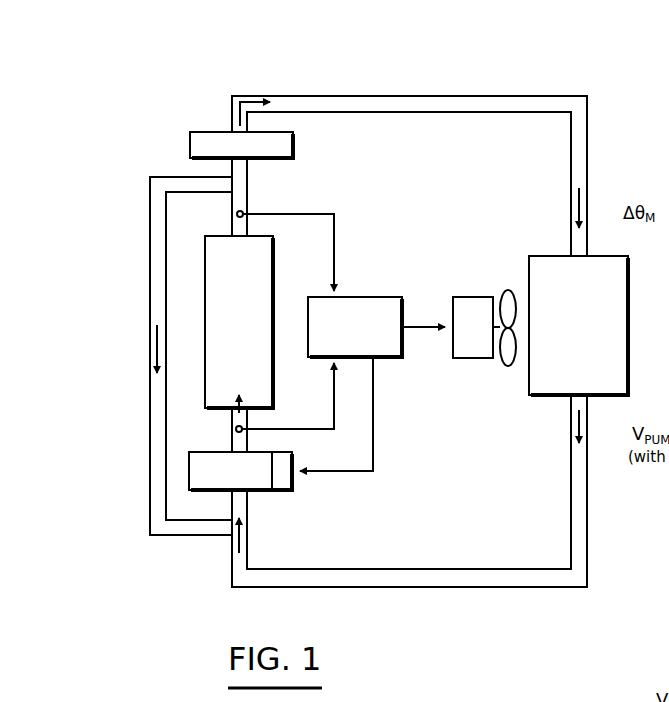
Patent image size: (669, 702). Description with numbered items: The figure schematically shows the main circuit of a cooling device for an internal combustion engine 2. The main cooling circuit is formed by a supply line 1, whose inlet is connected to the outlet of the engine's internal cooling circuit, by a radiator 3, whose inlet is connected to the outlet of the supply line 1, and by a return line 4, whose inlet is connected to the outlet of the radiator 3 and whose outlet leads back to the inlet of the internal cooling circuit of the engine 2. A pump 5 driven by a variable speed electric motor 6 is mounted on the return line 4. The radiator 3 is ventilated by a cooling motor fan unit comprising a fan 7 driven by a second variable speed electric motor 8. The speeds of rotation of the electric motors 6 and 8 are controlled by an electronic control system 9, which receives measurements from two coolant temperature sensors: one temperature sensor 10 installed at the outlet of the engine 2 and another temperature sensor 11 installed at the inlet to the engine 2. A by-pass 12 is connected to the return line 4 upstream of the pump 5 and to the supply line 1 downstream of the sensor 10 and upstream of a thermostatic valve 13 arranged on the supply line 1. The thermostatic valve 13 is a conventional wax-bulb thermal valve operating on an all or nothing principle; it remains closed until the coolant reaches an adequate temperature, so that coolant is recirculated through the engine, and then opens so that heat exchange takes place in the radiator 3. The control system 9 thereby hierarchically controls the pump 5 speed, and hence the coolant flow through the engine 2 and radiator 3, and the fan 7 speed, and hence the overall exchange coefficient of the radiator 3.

The supply line 1 is at (437, 103).
The internal combustion engine 2 is at (257, 284).
The radiator 3 is at (603, 296).
The return line 4 is at (423, 587).
The pump 5 is at (255, 477).
The variable speed electric motor 6 is at (283, 480).
The fan 7 is at (510, 352).
The second variable speed electric motor 8 is at (477, 346).
The electronic control system 9 is at (388, 345).
The temperature sensor 10 is at (243, 212).
The temperature sensor 11 is at (236, 429).
The by-pass 12 is at (157, 493).
The thermostatic valve 13 is at (278, 147).